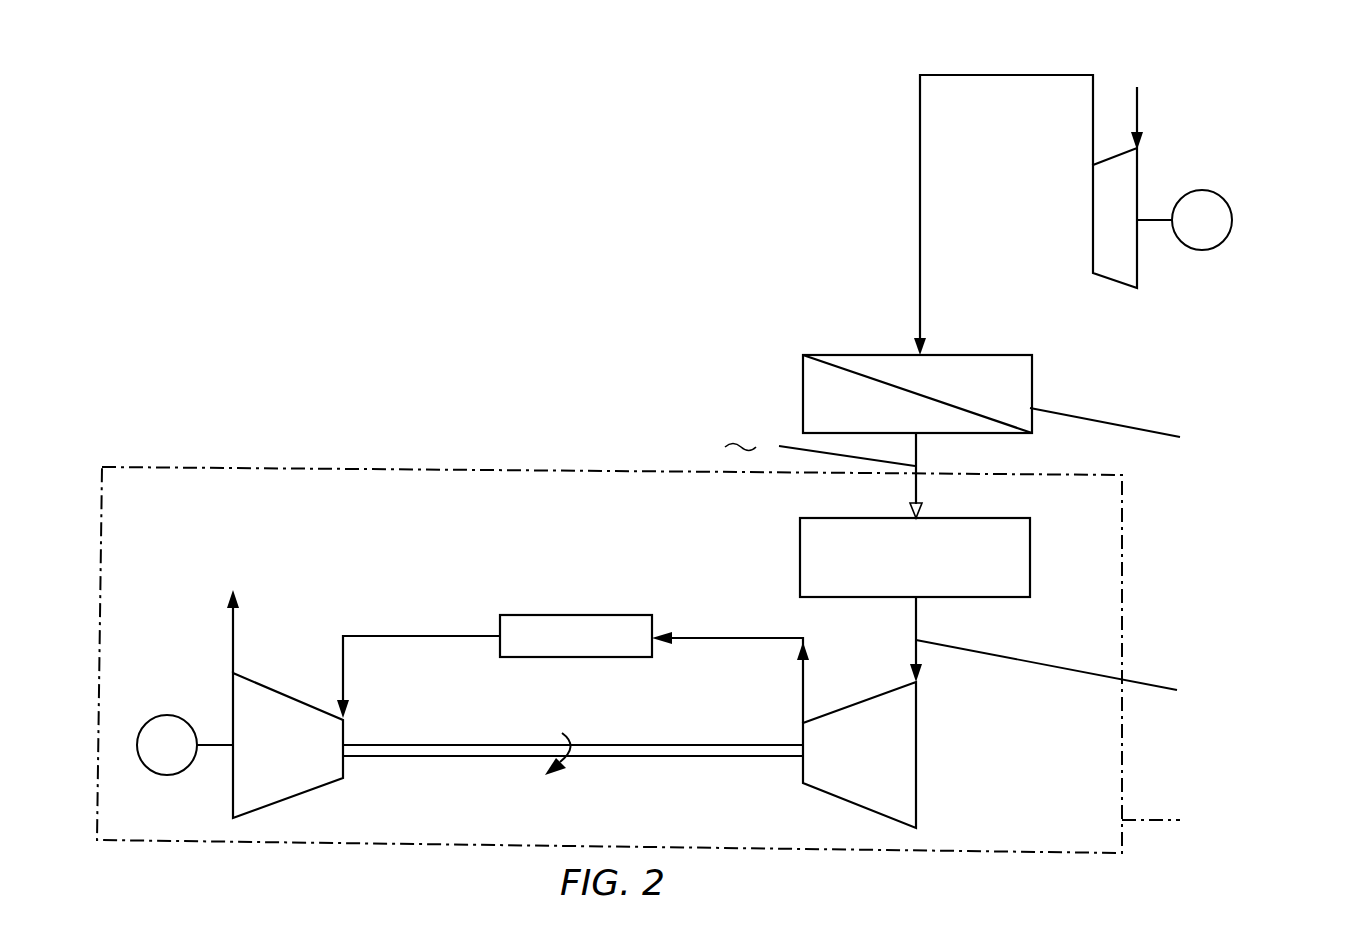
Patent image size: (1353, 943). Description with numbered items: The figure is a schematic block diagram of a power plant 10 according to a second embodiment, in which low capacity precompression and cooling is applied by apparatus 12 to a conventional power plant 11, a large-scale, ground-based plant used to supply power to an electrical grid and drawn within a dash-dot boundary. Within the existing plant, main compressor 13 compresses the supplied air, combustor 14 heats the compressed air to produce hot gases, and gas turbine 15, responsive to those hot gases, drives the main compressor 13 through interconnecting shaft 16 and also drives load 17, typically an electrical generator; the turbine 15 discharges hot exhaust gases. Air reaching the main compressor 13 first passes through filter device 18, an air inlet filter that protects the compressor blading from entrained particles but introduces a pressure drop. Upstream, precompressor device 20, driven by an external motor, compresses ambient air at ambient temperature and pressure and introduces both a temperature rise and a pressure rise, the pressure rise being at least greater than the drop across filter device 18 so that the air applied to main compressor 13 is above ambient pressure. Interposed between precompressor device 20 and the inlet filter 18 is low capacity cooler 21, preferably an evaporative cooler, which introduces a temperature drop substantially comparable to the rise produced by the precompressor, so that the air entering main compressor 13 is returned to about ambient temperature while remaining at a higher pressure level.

The power plant 10 is at (392, 278).
The conventional power plant 11 is at (1122, 733).
The apparatus 12 is at (980, 86).
The main compressor 13 is at (917, 740).
The combustor 14 is at (580, 614).
The gas turbine 15 is at (344, 733).
The interconnecting shaft 16 is at (685, 757).
The load 17 is at (167, 775).
The filter device 18 is at (1032, 548).
The precompressor device 20 is at (1118, 287).
The low capacity cooler 21 is at (1034, 387).